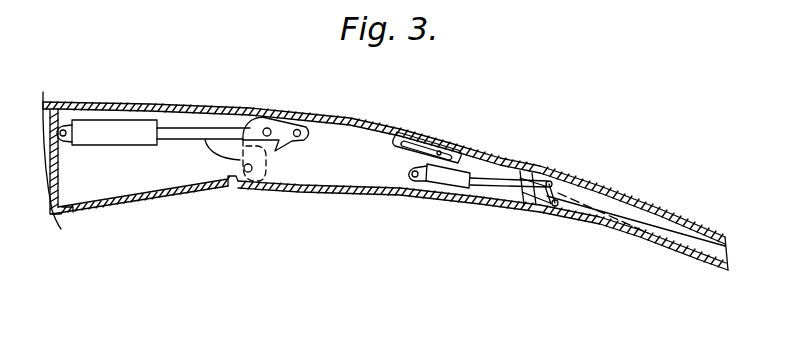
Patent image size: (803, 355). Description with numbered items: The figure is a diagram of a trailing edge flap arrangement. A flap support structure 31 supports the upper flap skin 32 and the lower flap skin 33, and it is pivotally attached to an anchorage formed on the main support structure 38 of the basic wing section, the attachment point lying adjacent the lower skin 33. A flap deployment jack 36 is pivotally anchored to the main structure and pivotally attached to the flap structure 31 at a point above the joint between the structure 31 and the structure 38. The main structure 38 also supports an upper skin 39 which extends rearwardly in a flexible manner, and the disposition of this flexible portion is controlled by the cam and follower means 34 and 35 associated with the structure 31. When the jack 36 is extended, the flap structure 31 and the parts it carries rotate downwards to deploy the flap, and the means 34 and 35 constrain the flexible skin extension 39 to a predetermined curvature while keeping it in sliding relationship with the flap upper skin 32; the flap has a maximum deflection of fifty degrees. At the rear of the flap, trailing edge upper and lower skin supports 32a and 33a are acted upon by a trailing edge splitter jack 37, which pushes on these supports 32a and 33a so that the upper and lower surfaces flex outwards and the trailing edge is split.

The support structure 31 is at (337, 155).
The upper flap skin 32 is at (512, 160).
The trailing edge upper skin support 32a is at (562, 198).
The lower flap skin 33 is at (381, 194).
The trailing edge lower skin support 33a is at (631, 228).
The flexible skin disposition control means 34 is at (287, 125).
The flexible skin disposition control means 35 is at (423, 142).
The flap deployment jack 36 is at (103, 132).
The trailing edge splitter jack 37 is at (442, 178).
The support structure 38 is at (126, 177).
The upper skin 39 is at (212, 120).